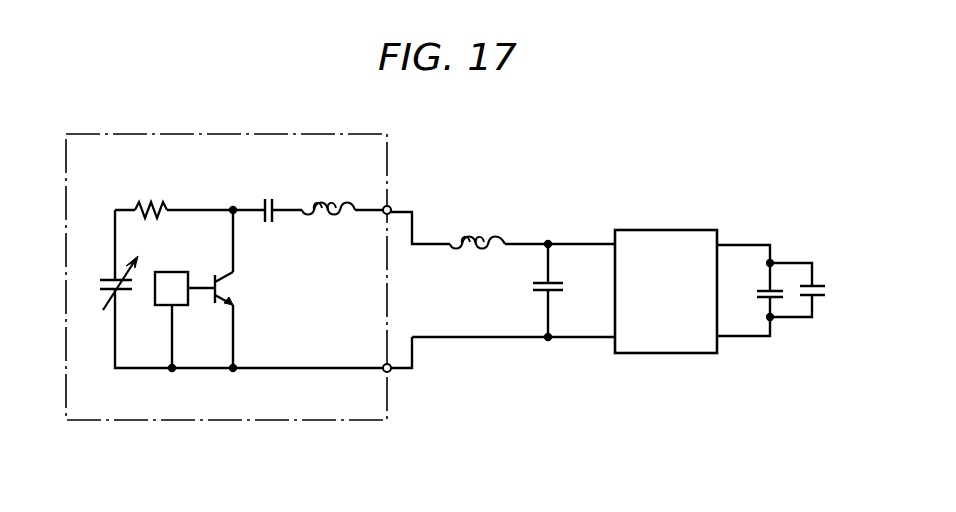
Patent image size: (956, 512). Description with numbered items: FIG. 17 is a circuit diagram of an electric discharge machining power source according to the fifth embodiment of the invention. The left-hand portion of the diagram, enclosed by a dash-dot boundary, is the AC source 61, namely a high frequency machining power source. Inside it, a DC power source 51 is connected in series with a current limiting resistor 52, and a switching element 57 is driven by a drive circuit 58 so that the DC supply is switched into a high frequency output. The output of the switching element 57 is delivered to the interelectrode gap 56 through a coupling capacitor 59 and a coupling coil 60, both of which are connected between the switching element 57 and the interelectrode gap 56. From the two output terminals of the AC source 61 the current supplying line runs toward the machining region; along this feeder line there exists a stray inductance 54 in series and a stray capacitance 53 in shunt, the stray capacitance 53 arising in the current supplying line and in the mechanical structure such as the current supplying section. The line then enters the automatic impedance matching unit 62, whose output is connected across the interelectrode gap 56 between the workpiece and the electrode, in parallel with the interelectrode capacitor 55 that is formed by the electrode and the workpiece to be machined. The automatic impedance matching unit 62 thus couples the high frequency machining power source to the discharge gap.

The DC power source 51 is at (114, 278).
The current limiting resistor 52 is at (150, 205).
The stray capacitance 53 is at (532, 289).
The stray inductance 54 is at (483, 238).
The interelectrode capacitor 55 is at (818, 285).
The interelectrode gap 56 is at (766, 291).
The switching element 57 is at (240, 287).
The drive circuit 58 is at (170, 272).
The coupling capacitor 59 is at (268, 198).
The coupling coil 60 is at (336, 200).
The AC source 61 is at (345, 421).
The automatic impedance matching unit 62 is at (690, 230).